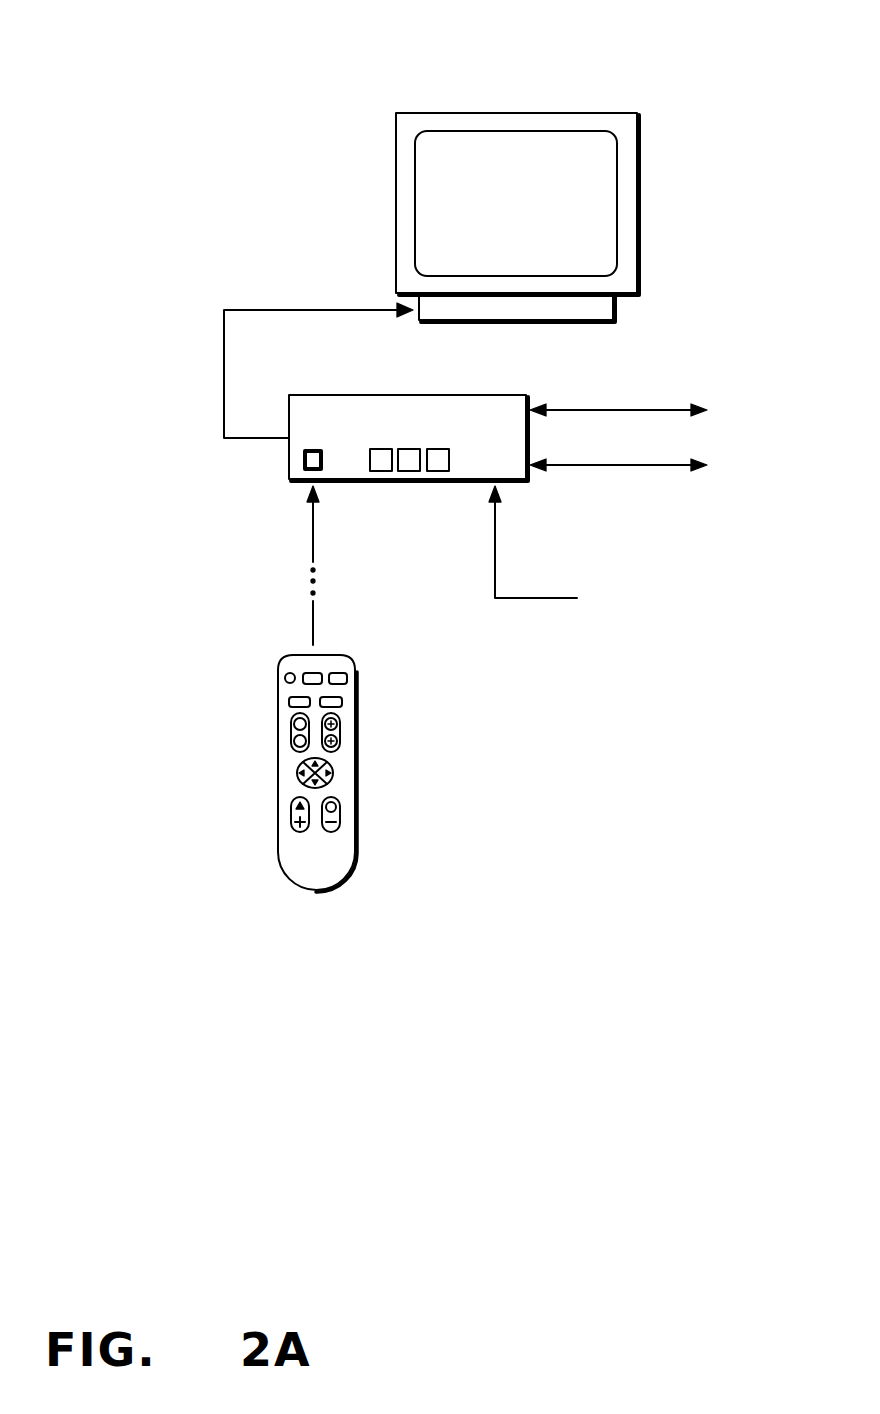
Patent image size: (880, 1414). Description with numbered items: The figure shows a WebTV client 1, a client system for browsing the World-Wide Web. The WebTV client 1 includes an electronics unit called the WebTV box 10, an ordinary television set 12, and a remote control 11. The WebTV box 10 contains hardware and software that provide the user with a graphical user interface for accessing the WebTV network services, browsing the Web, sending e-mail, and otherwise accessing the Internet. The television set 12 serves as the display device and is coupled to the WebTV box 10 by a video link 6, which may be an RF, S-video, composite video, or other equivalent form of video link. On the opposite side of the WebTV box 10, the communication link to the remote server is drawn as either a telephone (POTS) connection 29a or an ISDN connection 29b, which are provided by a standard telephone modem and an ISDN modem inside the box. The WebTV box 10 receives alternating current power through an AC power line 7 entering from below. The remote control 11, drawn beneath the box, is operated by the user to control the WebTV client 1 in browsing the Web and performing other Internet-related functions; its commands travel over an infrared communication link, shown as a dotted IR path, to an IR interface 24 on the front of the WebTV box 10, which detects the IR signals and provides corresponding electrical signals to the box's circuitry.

The WebTV client 1 is at (686, 52).
The television set 12 is at (603, 264).
The video link 6 is at (224, 371).
The WebTV box 10 is at (516, 470).
The IR interface 24 is at (323, 467).
The telephone (POTS) connection 29a is at (573, 408).
The ISDN connection 29b is at (583, 463).
The AC power line 7 is at (528, 599).
The remote control 11 is at (326, 871).